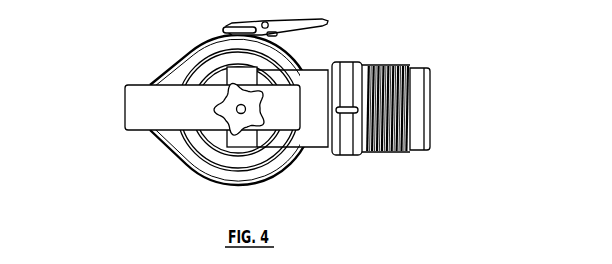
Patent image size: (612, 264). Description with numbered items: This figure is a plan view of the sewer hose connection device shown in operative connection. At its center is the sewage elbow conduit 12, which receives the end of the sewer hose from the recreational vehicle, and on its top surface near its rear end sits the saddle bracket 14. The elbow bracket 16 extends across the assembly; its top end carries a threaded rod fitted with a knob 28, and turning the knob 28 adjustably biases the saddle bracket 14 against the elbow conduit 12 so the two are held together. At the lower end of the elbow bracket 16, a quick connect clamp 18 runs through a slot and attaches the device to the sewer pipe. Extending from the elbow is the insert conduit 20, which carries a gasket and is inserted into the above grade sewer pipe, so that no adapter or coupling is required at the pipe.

The sewage elbow conduit 12 is at (418, 150).
The saddle bracket 14 is at (238, 148).
The elbow bracket 16 is at (124, 108).
The quick connect clamp 18 is at (166, 71).
The insert conduit 20 is at (281, 166).
The knob 28 is at (225, 124).